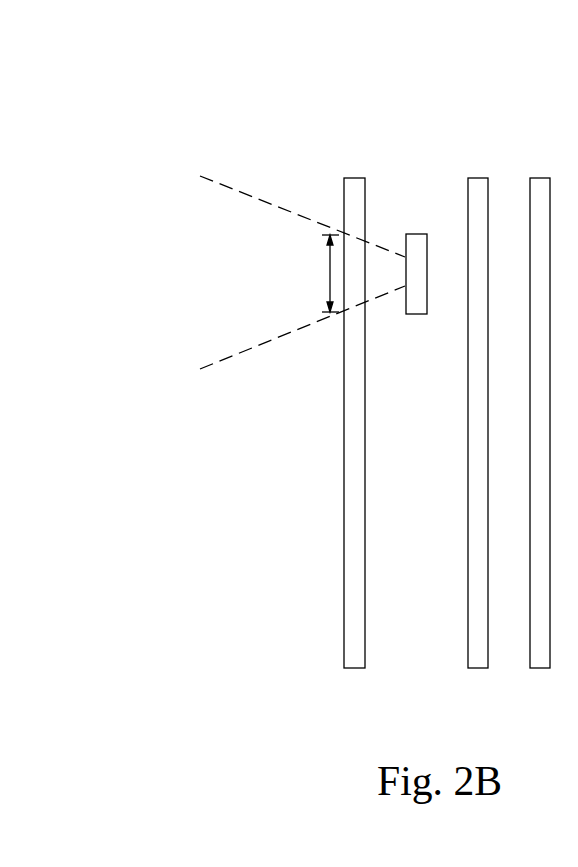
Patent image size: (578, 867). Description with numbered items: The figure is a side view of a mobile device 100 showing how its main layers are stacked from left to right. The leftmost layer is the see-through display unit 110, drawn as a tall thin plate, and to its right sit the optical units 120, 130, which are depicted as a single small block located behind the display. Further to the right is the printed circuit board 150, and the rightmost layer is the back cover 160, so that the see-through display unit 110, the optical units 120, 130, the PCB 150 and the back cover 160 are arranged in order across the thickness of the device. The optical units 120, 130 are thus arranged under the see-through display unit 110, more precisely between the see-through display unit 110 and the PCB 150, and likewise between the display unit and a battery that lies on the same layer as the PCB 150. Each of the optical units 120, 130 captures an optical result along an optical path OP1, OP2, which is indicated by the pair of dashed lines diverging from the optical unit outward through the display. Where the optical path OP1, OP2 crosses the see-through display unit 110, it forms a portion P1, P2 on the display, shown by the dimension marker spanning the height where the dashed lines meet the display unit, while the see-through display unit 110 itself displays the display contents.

The mobile device 100 is at (289, 42).
The see-through display unit 110 is at (353, 178).
The optical unit 120 is at (418, 226).
The optical unit 130 is at (418, 247).
The printed circuit board 150 is at (477, 178).
The back cover 160 is at (538, 178).
The portion P1 is at (295, 273).
The portion P2 is at (295, 273).
The optical path OP1 is at (225, 275).
The optical path OP2 is at (221, 326).